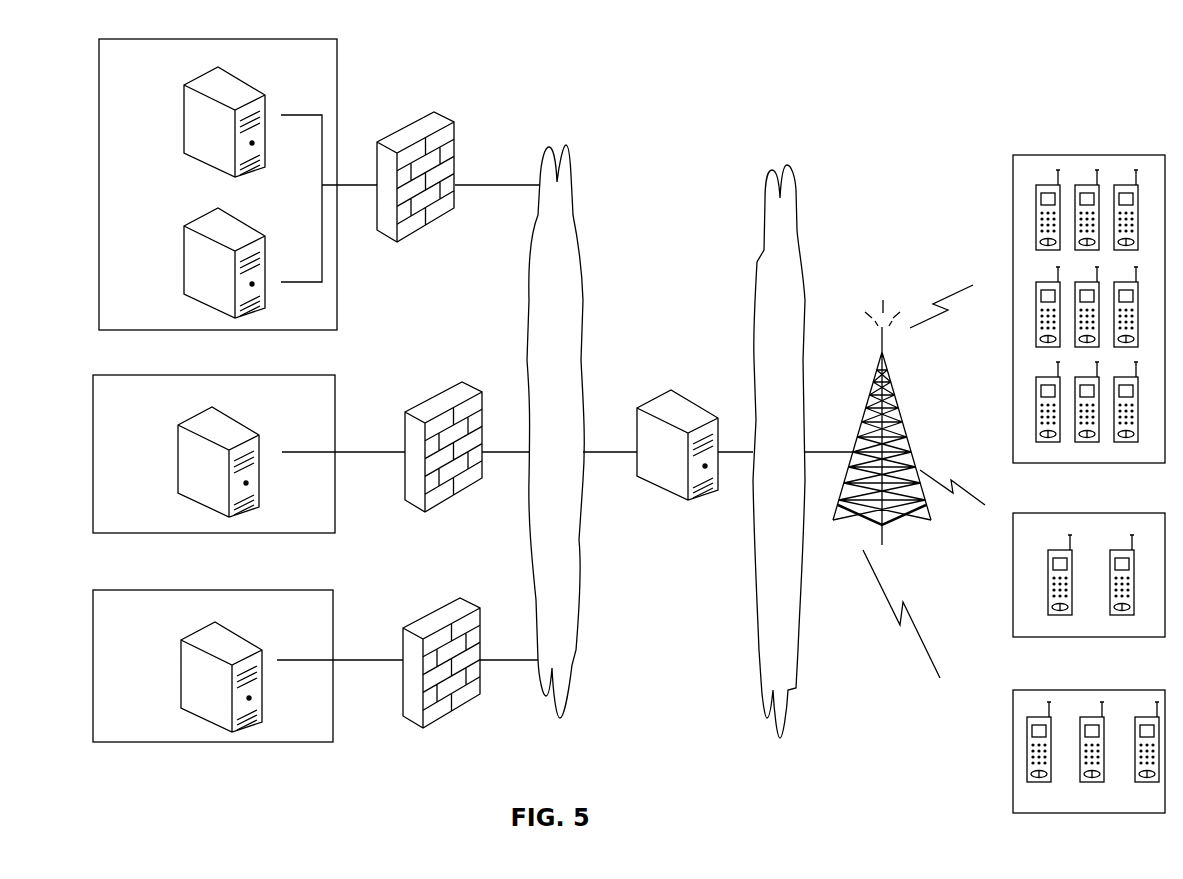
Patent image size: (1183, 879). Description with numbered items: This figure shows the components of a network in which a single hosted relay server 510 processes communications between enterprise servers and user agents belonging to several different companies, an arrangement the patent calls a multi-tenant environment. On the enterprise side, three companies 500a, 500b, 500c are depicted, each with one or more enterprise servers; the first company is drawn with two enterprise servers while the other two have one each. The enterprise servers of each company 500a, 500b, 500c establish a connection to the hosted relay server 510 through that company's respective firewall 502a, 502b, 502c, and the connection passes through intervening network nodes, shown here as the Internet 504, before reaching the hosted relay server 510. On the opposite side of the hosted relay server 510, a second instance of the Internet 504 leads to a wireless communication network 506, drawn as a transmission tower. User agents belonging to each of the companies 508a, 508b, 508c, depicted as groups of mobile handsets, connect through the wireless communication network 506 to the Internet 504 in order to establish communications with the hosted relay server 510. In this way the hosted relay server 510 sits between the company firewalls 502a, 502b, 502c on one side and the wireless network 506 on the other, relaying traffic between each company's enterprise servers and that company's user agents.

The company 500a is at (97, 208).
The company 500b is at (93, 460).
The company 500c is at (93, 652).
The firewall 502a is at (425, 223).
The firewall 502b is at (453, 493).
The firewall 502c is at (451, 709).
The Internet 504 is at (575, 658).
The wireless communication network 506 is at (870, 525).
The company 508a is at (1013, 180).
The company 508b is at (1013, 586).
The company 508c is at (1013, 756).
The hosted relay server 510 is at (665, 495).